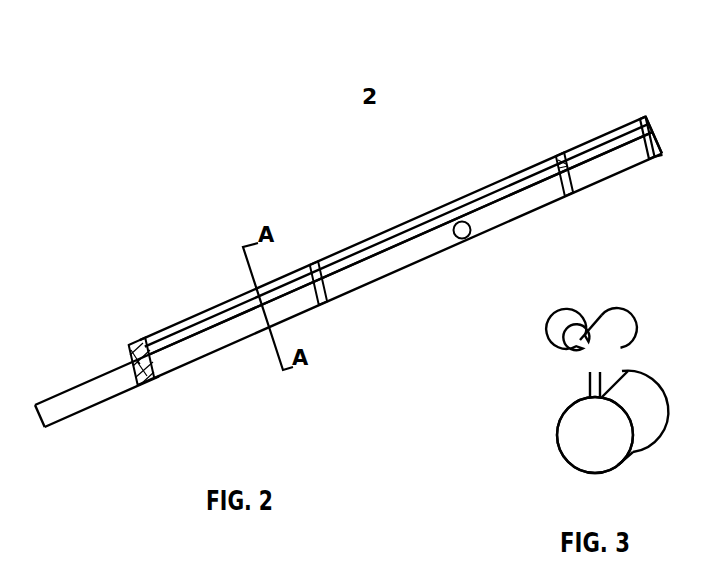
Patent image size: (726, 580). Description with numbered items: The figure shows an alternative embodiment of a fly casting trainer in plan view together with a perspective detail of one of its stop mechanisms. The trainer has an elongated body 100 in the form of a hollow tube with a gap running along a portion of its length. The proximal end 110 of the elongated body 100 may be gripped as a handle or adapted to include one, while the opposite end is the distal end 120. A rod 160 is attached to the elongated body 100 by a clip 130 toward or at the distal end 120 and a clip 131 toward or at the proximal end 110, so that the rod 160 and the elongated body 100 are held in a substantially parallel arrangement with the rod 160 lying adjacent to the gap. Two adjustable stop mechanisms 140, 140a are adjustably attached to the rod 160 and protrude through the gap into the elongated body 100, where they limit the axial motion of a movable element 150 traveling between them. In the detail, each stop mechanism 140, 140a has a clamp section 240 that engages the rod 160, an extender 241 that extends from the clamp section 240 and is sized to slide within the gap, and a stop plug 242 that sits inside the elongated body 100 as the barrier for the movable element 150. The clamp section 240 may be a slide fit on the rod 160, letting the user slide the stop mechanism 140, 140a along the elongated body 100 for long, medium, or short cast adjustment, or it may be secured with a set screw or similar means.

In FIG. 2, the elongated body 100 is at (386, 280).
In FIG. 2, the proximal end 110 is at (90, 418).
In FIG. 2, the distal end 120 is at (633, 174).
In FIG. 2, the clip 130 is at (135, 340).
In FIG. 2, the clip 131 is at (650, 113).
In FIG. 2, the adjustable stop mechanism 140 is at (322, 258).
In FIG. 3, the adjustable stop mechanism 140 is at (546, 432).
In FIG. 2, the adjustable stop mechanism 140a is at (559, 154).
In FIG. 2, the movable element 150 is at (473, 237).
In FIG. 2, the rod 160 is at (190, 315).
In FIG. 3, the clamp section 240 is at (637, 313).
In FIG. 3, the extender 241 is at (628, 370).
In FIG. 3, the stop plug 242 is at (640, 445).